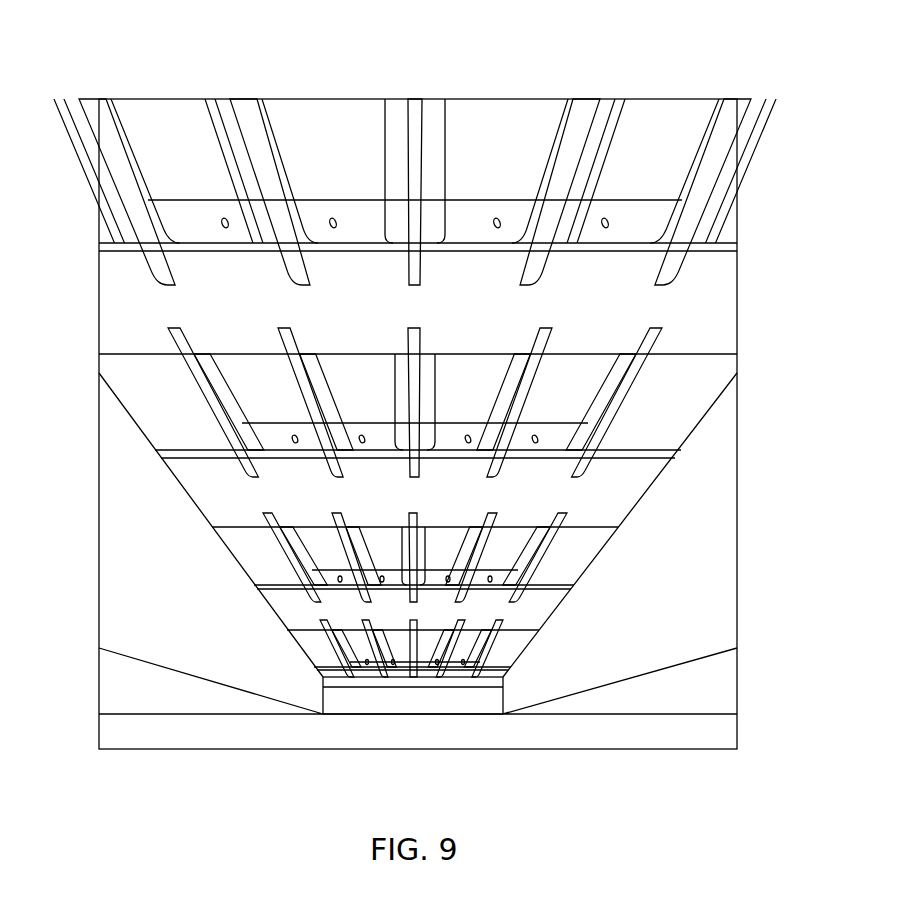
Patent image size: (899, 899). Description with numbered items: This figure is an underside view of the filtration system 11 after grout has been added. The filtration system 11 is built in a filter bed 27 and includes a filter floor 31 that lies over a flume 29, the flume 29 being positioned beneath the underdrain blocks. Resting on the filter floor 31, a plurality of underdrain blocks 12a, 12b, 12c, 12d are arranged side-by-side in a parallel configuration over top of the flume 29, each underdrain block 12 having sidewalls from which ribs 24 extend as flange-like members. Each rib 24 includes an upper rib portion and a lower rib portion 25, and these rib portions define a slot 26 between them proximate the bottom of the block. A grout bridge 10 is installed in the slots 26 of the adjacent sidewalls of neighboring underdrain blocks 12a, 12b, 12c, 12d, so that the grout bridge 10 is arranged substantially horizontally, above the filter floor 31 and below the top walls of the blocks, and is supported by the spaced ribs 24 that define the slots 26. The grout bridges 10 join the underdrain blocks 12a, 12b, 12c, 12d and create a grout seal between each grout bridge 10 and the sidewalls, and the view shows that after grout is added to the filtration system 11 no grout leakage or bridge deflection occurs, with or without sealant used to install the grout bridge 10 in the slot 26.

The grout bridge 10 is at (640, 300).
The filtration system 11 is at (115, 79).
The underdrain block 12 is at (637, 152).
The underdrain block 12a is at (178, 161).
The underdrain block 12b is at (170, 413).
The underdrain block 12c is at (270, 550).
The underdrain block 12d is at (320, 650).
The rib 24 is at (545, 274).
The lower rib portion 25 is at (415, 192).
The slot 26 is at (527, 250).
The filter bed 27 is at (370, 697).
The flume 29 is at (452, 692).
The filter floor 31 is at (172, 703).